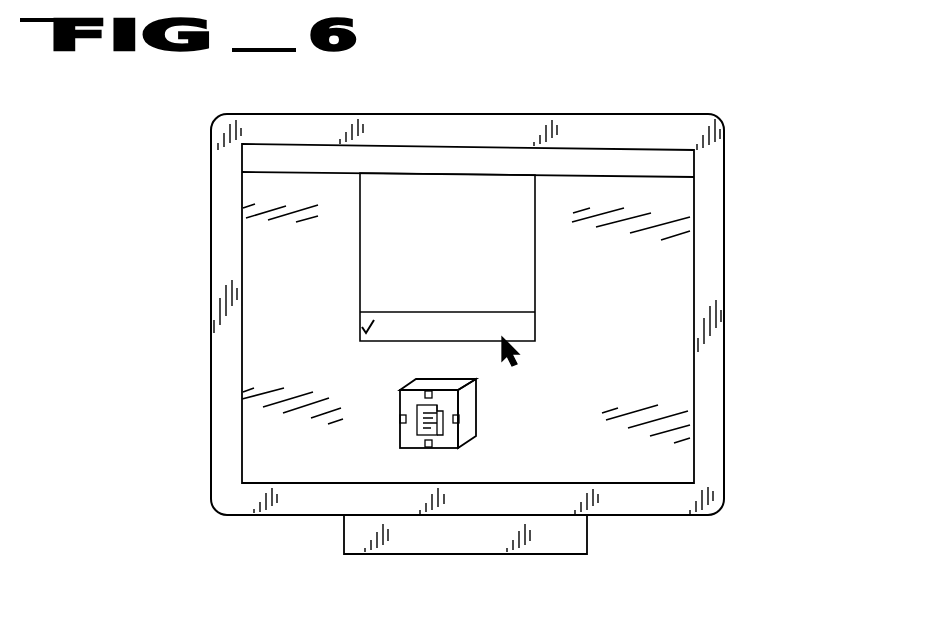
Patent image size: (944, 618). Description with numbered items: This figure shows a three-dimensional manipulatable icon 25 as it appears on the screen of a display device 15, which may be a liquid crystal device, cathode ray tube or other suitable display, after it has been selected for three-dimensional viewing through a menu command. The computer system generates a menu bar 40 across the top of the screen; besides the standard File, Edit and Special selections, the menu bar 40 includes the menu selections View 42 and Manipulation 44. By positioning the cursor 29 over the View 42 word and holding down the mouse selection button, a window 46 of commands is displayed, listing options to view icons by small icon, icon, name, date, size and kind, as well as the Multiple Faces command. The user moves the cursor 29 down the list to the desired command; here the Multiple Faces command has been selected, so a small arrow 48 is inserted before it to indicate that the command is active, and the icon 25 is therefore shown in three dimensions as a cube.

The display device 15 is at (722, 457).
The menu bar 40 is at (683, 167).
The View menu selection 42 is at (390, 152).
The Manipulation menu selection 44 is at (654, 152).
The window of commands 46 is at (358, 250).
The small arrow 48 is at (358, 333).
The cursor 29 is at (518, 357).
The icon 25 is at (476, 420).